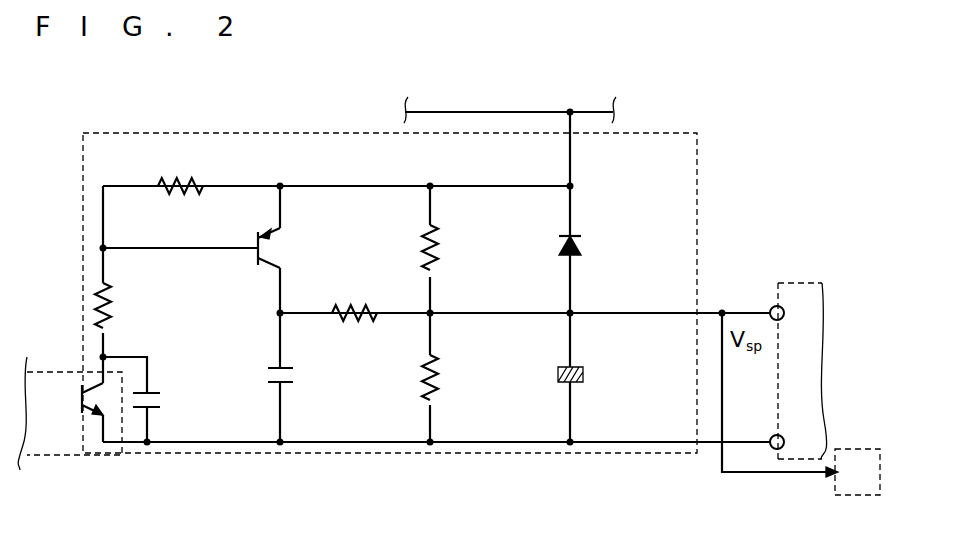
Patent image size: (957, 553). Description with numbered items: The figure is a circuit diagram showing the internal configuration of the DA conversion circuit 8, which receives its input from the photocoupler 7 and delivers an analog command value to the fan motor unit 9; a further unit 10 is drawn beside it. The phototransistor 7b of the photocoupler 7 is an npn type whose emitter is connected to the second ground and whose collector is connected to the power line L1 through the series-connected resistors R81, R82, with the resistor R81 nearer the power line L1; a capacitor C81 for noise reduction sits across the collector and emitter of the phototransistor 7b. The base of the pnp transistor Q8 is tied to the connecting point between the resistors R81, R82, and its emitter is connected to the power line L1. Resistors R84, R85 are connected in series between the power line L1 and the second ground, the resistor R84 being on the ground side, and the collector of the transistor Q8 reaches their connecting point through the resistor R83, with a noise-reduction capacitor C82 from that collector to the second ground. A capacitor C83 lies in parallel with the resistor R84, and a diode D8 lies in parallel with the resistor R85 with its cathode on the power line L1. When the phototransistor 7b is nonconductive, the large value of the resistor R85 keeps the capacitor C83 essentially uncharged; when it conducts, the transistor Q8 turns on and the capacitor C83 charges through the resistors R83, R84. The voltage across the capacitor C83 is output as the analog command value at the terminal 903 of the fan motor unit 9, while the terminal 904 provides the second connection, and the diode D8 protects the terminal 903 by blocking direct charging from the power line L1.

The DA conversion circuit 8 is at (251, 133).
The photocoupler 7 is at (55, 372).
The phototransistor 7b is at (80, 406).
The fan motor unit 9 is at (803, 283).
The load / speaker unit 10 is at (858, 449).
The terminal 903 is at (771, 308).
The connector terminal 904 is at (771, 437).
The power line L1 is at (447, 111).
The transistor Q8 is at (264, 236).
The diode D8 is at (585, 247).
The resistor R81 is at (180, 182).
The resistor R82 is at (113, 302).
The resistor R83 is at (353, 302).
The resistor R84 is at (440, 377).
The resistor R85 is at (439, 247).
The capacitor C81 is at (163, 400).
The capacitor C82 is at (295, 378).
The capacitor C83 is at (586, 375).